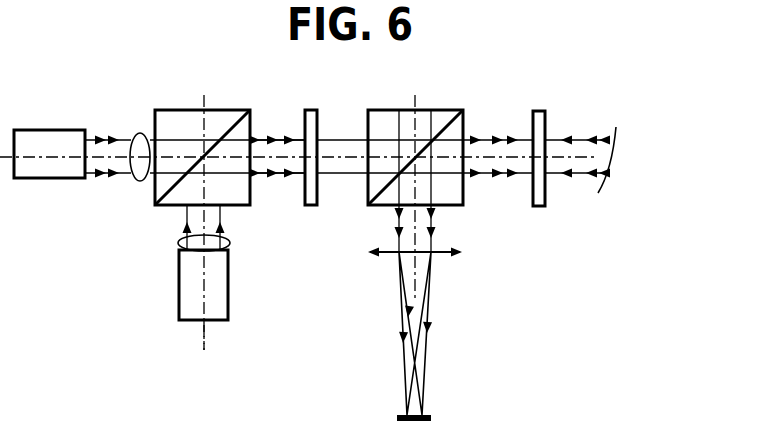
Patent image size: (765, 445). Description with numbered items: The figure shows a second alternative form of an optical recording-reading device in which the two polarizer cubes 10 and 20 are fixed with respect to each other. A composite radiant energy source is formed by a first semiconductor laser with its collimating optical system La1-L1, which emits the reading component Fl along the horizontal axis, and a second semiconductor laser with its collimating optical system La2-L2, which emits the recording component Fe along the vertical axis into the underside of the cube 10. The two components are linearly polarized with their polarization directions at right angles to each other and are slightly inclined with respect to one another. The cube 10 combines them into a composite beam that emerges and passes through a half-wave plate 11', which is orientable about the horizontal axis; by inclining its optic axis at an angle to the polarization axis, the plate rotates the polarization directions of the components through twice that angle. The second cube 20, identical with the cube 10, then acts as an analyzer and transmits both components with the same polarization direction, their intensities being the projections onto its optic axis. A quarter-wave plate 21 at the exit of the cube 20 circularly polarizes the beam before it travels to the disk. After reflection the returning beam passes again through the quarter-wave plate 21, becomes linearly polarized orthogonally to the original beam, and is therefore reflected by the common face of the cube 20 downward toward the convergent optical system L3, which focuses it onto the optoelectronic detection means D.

The cube 10 is at (195, 110).
The half-wave plate 11' is at (207, 125).
The second cube 20 is at (403, 110).
The quarter-wave plate 21 is at (538, 110).
The first semiconductor laser with collimating optical system La1-L1 is at (36, 131).
The second semiconductor laser with collimating optical system La2-L2 is at (178, 307).
The reading component Fl is at (146, 182).
The recording component Fe is at (178, 241).
The convergent optical system L3 is at (450, 256).
The optoelectronic detection means D is at (429, 415).